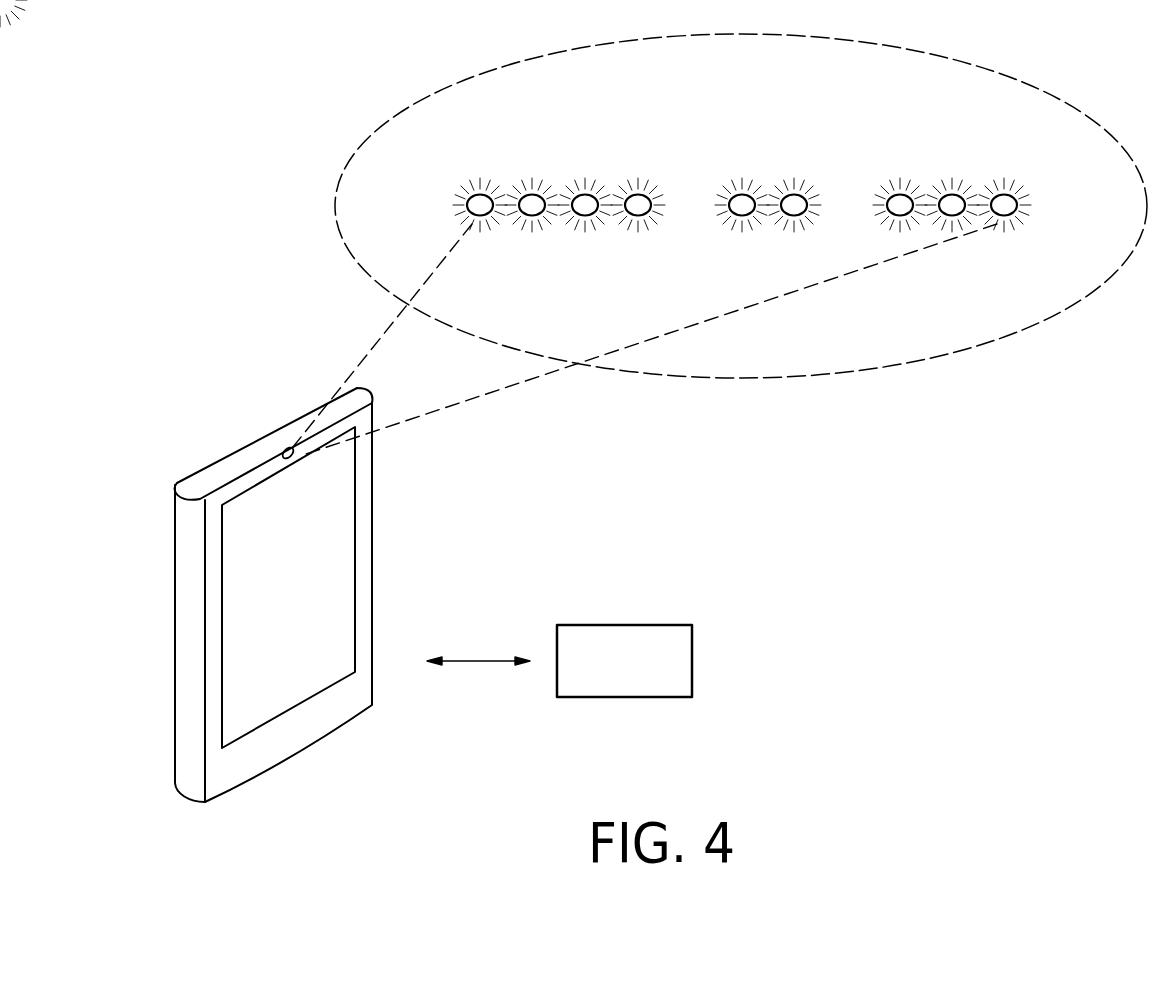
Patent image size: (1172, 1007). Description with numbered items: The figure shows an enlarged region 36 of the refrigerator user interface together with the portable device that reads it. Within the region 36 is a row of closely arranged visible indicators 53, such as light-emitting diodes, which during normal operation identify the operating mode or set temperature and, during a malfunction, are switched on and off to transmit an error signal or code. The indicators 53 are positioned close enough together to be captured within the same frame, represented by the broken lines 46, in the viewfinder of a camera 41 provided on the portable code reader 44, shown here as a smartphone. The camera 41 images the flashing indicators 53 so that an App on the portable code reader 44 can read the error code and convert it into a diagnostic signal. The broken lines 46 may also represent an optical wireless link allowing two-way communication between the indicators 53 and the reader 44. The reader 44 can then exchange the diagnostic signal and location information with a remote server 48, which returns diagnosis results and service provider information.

The region of the user interface 36 is at (1007, 350).
The visible indicator 53 is at (483, 209).
The broken lines 46 is at (370, 343).
The camera 41 is at (286, 450).
The portable code reader 44 is at (392, 551).
The remote server 48 is at (692, 661).